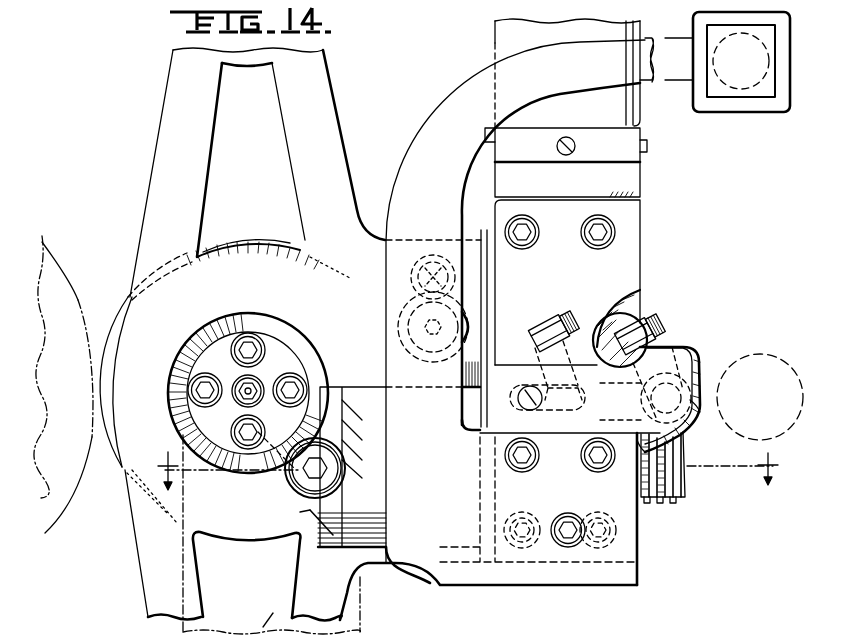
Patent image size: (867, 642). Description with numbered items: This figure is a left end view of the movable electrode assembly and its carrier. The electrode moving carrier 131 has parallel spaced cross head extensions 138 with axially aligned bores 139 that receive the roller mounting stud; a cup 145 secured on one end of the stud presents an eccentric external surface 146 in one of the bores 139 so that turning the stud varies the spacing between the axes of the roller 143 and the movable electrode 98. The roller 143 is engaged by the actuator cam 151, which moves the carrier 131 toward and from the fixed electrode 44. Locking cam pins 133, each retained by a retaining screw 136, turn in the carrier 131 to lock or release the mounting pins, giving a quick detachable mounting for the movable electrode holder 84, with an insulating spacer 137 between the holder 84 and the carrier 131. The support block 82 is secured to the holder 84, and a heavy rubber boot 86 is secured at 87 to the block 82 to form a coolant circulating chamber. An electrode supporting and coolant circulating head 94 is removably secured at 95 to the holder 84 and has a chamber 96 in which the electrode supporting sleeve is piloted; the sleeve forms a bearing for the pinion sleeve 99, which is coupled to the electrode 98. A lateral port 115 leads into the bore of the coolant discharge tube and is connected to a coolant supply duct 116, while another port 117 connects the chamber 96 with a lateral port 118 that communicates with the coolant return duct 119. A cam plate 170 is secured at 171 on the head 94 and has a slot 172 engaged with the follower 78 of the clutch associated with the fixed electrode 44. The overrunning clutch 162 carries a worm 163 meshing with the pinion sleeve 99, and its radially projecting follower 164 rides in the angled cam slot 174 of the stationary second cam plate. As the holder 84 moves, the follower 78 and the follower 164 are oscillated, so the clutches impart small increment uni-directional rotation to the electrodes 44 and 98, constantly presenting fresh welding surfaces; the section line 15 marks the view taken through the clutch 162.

The cross head extension 138 is at (172, 128).
The roller 143 is at (114, 322).
The actuator cam 151 is at (50, 243).
The bore 139 is at (278, 300).
The cup 145 is at (225, 368).
The eccentric external surface 146 is at (174, 390).
The follower 164 is at (336, 470).
The overrunning clutch 162 is at (365, 518).
The angled cam slot 174 is at (300, 512).
The section line 15- 15 is at (468, 471).
The cam plate 170 is at (393, 268).
The electrode moving carrier 131 is at (473, 240).
The insulating spacer 137 is at (490, 270).
The retaining screw 136 is at (395, 305).
The locking cam pin 133 is at (400, 347).
The rubber boot 86 is at (493, 33).
The follower 78 is at (758, 78).
The slot 172 is at (736, 97).
The support block 82 is at (641, 206).
The boot securing point 87 is at (641, 147).
The electrode supporting and coolant circulating head 94 is at (640, 248).
The head securing means 95 is at (582, 233).
The coolant return duct 119 is at (553, 318).
The coolant supply duct 116 is at (655, 318).
The movable electrode holder 84 is at (640, 307).
The port 117 is at (615, 405).
The lateral port 118 is at (575, 380).
The movable electrode 98 is at (703, 380).
The lateral port 115 is at (690, 350).
The pinion sleeve 99 is at (702, 412).
The chamber 96 is at (688, 428).
The fixed electrode 44 is at (768, 364).
The worm 163 is at (683, 490).
The cam plate securing means 171 is at (568, 512).